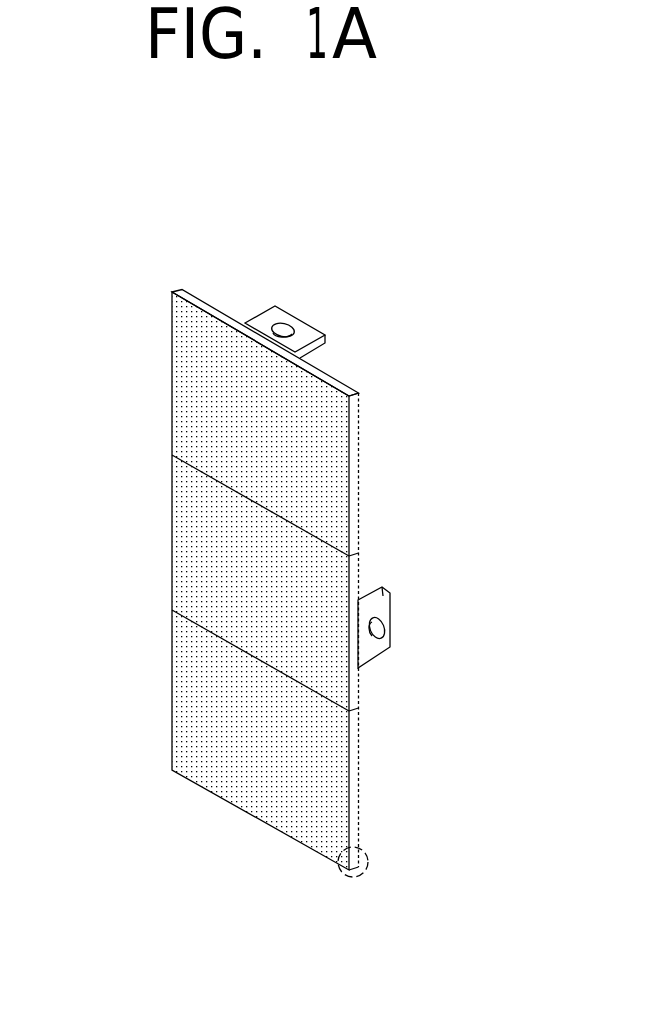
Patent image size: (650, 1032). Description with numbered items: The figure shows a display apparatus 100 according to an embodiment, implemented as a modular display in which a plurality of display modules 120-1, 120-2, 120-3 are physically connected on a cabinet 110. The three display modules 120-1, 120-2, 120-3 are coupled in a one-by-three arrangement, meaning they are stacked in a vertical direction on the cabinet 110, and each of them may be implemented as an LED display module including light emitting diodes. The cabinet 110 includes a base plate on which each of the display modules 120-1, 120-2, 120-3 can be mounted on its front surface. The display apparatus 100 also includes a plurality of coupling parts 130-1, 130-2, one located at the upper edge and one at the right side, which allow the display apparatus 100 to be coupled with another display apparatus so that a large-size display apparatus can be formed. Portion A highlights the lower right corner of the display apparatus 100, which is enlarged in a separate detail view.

The display apparatus 100 is at (296, 158).
The cabinet 110 is at (343, 386).
The display module 120-1 is at (195, 407).
The display module 120-2 is at (195, 537).
The display module 120-3 is at (194, 704).
The coupling part 130-1 is at (302, 324).
The coupling part 130-2 is at (391, 618).
The Portion A is at (382, 859).